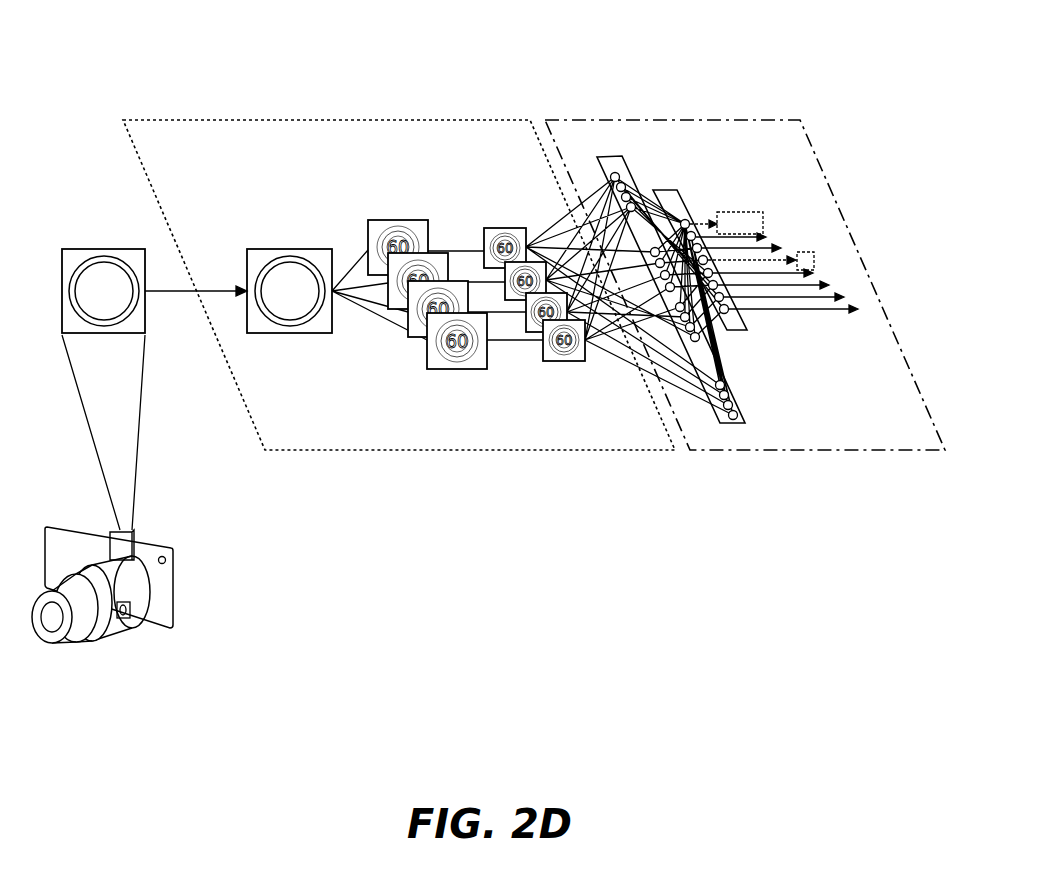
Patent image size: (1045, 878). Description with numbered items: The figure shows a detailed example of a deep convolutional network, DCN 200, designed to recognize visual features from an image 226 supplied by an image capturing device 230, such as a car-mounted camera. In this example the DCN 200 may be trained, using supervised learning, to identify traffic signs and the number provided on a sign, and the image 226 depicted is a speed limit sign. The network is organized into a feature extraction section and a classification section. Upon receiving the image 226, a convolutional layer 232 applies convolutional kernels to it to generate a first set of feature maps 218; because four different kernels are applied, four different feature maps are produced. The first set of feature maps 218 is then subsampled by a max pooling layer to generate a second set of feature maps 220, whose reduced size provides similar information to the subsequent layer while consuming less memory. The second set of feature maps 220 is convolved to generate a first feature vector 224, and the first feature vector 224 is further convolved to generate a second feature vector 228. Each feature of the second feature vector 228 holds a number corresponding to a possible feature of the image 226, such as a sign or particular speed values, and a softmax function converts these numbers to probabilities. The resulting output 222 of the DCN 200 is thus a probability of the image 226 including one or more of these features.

The deep convolutional network 200 is at (192, 83).
The first set of feature maps 218 is at (393, 210).
The second set of feature maps 220 is at (493, 210).
The output 222 is at (725, 173).
The first feature vector 224 is at (607, 157).
The image 226 is at (98, 248).
The second feature vector 228 is at (745, 320).
The image capturing device 230 is at (100, 540).
The convolutional layer 232 is at (283, 248).